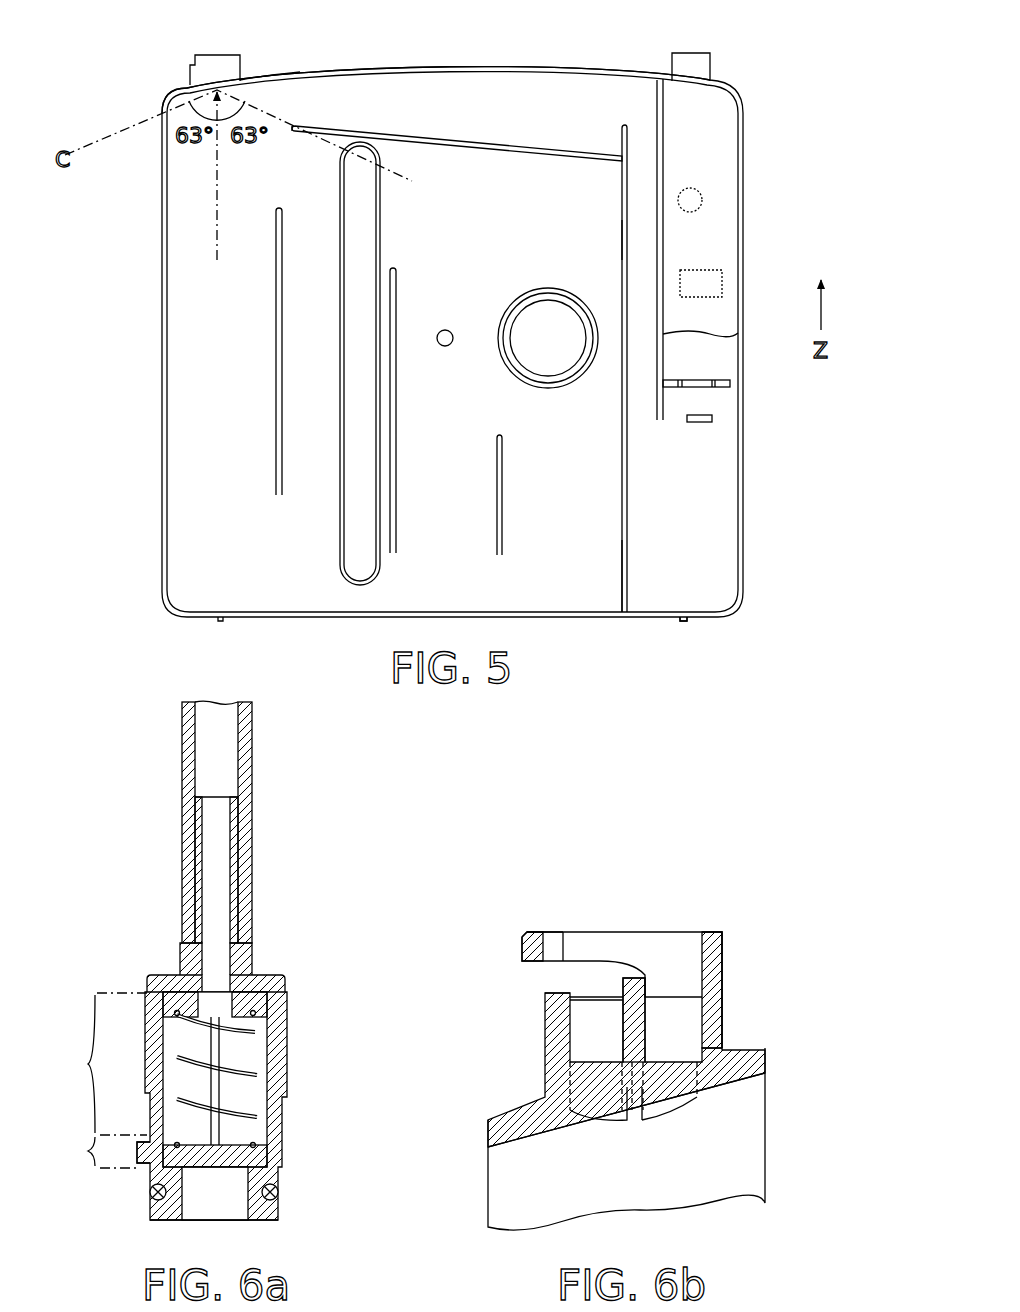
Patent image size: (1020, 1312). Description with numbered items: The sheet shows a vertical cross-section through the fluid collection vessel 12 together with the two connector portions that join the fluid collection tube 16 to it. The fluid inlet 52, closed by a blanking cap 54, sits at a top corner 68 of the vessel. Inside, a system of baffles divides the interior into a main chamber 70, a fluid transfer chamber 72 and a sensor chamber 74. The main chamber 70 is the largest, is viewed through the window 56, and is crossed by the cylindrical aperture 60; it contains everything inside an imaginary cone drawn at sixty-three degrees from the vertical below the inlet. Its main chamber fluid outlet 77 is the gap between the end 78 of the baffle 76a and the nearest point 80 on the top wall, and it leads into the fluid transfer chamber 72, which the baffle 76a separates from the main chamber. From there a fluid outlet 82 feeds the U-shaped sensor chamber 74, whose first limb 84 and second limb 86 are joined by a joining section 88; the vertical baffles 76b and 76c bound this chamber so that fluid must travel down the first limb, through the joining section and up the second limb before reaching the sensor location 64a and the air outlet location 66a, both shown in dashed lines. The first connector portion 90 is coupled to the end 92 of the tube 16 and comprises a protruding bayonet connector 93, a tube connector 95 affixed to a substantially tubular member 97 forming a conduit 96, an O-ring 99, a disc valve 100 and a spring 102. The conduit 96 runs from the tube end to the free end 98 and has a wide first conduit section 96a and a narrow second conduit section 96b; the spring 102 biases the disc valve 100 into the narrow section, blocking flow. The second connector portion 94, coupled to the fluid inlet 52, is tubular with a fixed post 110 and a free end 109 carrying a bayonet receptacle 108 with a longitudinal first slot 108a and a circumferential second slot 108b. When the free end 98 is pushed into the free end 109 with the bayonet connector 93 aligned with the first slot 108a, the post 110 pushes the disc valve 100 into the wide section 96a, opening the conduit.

In FIG. 5, the fluid collection vessel 12 is at (105, 84).
In FIG. 5, the fluid inlet 52 is at (207, 53).
In FIG. 6b, the fluid inlet 52 is at (765, 1133).
In FIG. 5, the blanking cap 54 is at (692, 53).
In FIG. 5, the window 56 is at (380, 228).
In FIG. 5, the cylindrical aperture 60 is at (527, 297).
In FIG. 5, the sensor location 64a is at (722, 282).
In FIG. 5, the air outlet location 66a is at (702, 198).
In FIG. 5, the top corner 68 is at (177, 92).
In FIG. 5, the main chamber 70 is at (446, 411).
In FIG. 5, the fluid transfer chamber 72 is at (375, 293).
In FIG. 5, the sensor chamber 74 is at (696, 383).
In FIG. 5, the baffle 76a is at (508, 153).
In FIG. 5, the baffle 76b is at (623, 570).
In FIG. 5, the baffle 76c is at (657, 95).
In FIG. 5, the main chamber fluid outlet 77 is at (293, 92).
In FIG. 5, the end of baffle 78 is at (293, 128).
In FIG. 5, the nearest point on top of vessel 80 is at (360, 68).
In FIG. 5, the fluid outlet of fluid transfer chamber 82 is at (625, 117).
In FIG. 5, the first limb 84 is at (640, 237).
In FIG. 5, the second limb 86 is at (700, 224).
In FIG. 5, the joining section 88 is at (686, 566).
In FIG. 6a, the tube 16 is at (254, 756).
In FIG. 6a, the first connector portion 90 is at (287, 1115).
In FIG. 6a, the end of tube 92 is at (237, 947).
In FIG. 6a, the protruding bayonet connector 93 is at (137, 1157).
In FIG. 6a, the tube connector 95 is at (180, 947).
In FIG. 6a, the conduit 96 is at (235, 1081).
In FIG. 6a, the first conduit section 96a is at (97, 1064).
In FIG. 6a, the second conduit section 96b is at (92, 1152).
In FIG. 6a, the substantially tubular member 97 is at (282, 998).
In FIG. 6a, the free end of first connector portion 98 is at (262, 1220).
In FIG. 6a, the O-ring seal 99 is at (280, 1190).
In FIG. 6a, the disc valve 100 is at (260, 1158).
In FIG. 6a, the spring 102 is at (260, 1075).
In FIG. 6b, the second connector portion 94 is at (766, 1060).
In FIG. 6b, the bayonet receptacle 108 is at (523, 947).
In FIG. 6b, the first slot 108a is at (543, 933).
In FIG. 6b, the second slot 108b is at (548, 980).
In FIG. 6b, the free end of second connector portion 109 is at (718, 933).
In FIG. 6b, the fixed post 110 is at (645, 1022).